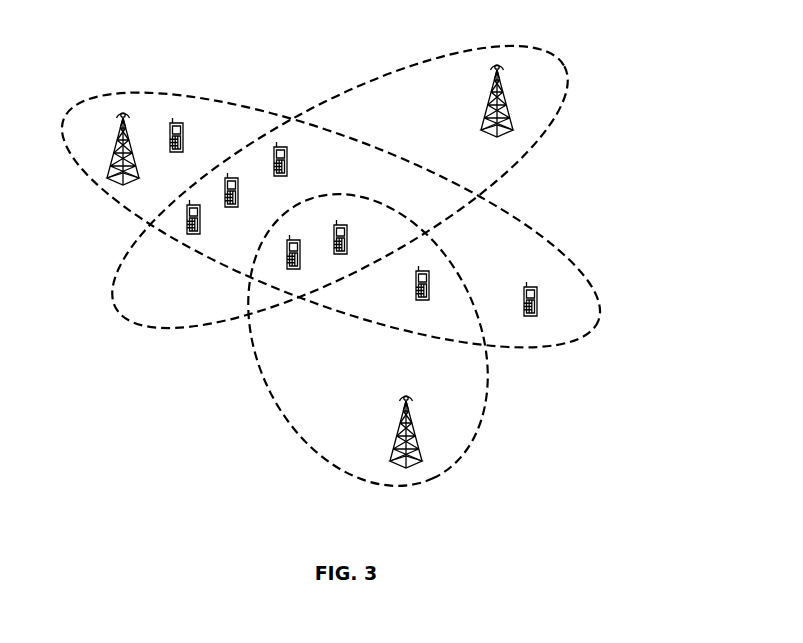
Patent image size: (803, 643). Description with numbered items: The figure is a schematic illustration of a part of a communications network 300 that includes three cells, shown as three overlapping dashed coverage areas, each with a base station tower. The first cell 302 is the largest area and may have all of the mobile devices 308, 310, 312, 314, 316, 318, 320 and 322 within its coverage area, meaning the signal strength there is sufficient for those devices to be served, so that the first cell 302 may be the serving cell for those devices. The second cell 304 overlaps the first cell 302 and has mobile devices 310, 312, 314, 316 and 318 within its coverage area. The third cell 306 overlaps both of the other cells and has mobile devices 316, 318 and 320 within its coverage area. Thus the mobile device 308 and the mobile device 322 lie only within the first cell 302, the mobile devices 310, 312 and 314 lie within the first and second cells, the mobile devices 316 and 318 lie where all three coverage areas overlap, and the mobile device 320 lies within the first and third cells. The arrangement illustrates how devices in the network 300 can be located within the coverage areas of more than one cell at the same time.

The network 300 is at (332, 542).
The first cell 302 is at (602, 297).
The second cell 304 is at (145, 323).
The third cell 306 is at (475, 440).
The mobile device 308 is at (177, 120).
The mobile device 310 is at (187, 227).
The mobile device 312 is at (232, 177).
The mobile device 314 is at (280, 147).
The mobile device 316 is at (287, 262).
The mobile device 318 is at (340, 224).
The mobile device 320 is at (420, 300).
The mobile device 322 is at (530, 317).